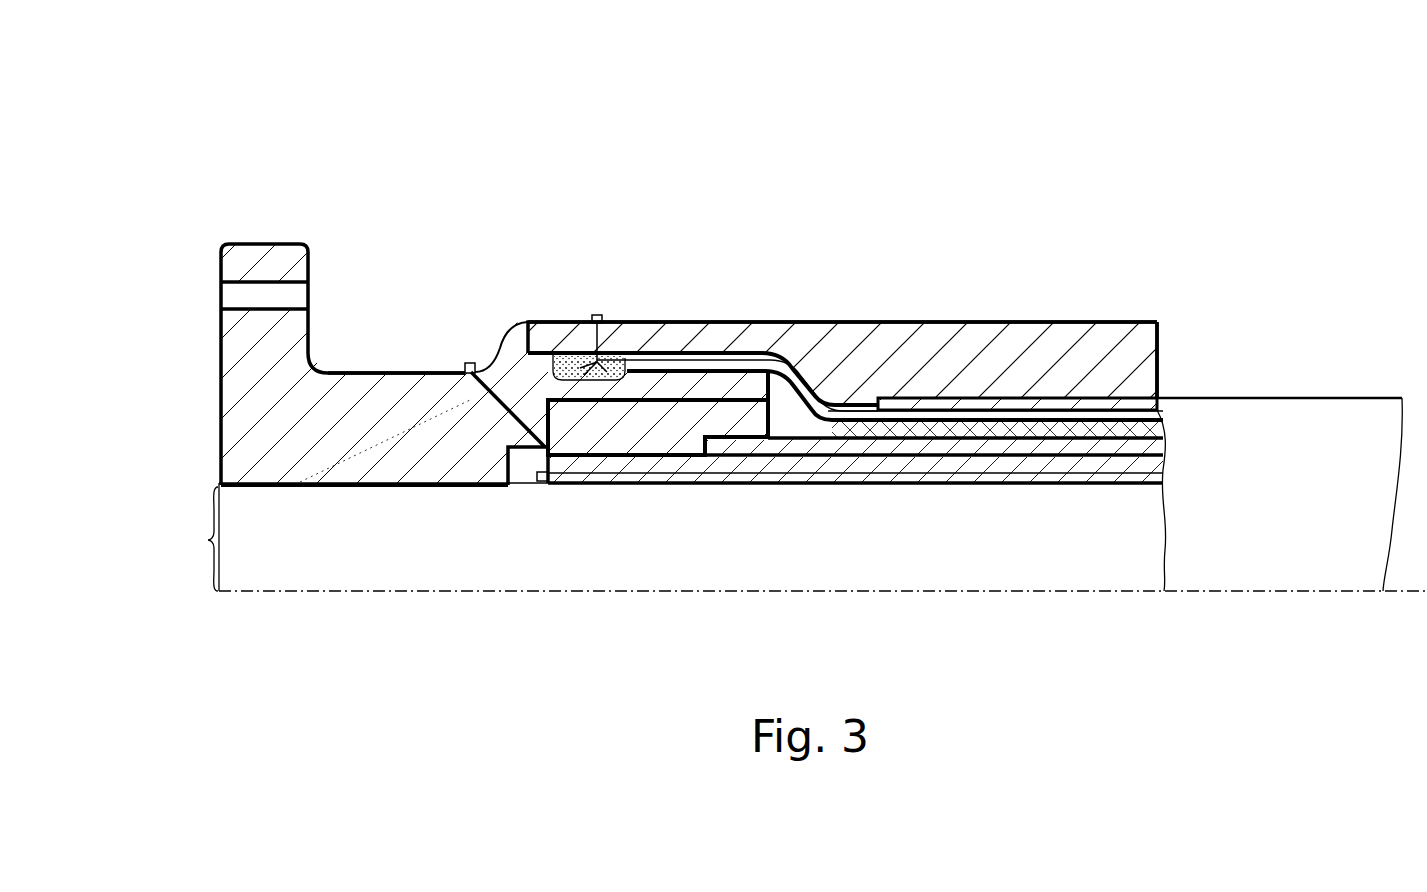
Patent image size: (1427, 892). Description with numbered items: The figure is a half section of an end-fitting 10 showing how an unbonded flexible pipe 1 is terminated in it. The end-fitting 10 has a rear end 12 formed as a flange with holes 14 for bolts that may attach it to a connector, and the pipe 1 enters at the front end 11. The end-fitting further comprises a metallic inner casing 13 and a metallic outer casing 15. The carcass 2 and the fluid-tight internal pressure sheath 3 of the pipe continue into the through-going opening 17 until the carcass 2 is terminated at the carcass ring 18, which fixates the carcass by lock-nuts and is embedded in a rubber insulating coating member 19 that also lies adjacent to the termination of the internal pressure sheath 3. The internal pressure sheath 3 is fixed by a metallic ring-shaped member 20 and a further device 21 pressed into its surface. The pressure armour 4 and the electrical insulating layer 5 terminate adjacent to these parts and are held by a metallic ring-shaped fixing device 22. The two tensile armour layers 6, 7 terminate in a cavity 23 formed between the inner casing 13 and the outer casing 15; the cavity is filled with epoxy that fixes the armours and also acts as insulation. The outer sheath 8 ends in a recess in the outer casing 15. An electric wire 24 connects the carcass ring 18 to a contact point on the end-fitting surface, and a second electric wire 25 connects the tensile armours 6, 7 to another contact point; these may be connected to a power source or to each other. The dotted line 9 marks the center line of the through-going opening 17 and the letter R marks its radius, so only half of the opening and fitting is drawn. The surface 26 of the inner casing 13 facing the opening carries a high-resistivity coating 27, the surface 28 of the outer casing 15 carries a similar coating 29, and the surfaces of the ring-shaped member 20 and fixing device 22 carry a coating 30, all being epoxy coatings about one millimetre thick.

The unbonded flexible pipe 1 is at (1313, 372).
The carcass 2 is at (757, 480).
The internal pressure sheath 3 is at (945, 462).
The pressure armour 4 is at (1017, 450).
The electrical insulating layer 5 is at (1082, 425).
The tensile armour layer 6 is at (653, 351).
The tensile armour layer 7 is at (704, 365).
The outer sheath 8 is at (1147, 403).
The dotted line 9 is at (325, 592).
The end-fitting 10 is at (760, 285).
The front end 11 is at (1157, 338).
The rear end 12 is at (220, 345).
The inner casing 13 is at (363, 378).
The holes 14 is at (307, 295).
The outer casing 15 is at (898, 322).
The through-going opening 17 is at (255, 577).
The carcass ring 18 is at (541, 482).
The insulating coating member 19 is at (513, 484).
The ring-shaped member 20 is at (635, 440).
The further device 21 is at (722, 450).
The ring-shaped fixing device 22 is at (787, 362).
The cavity 23 is at (566, 357).
The electric wire 24 is at (470, 362).
The second electric wire 25 is at (597, 314).
The surface of the inner casing 26 is at (332, 486).
The coating 27 is at (390, 486).
The surface of the outer casing 28 is at (955, 397).
The coating 29 is at (1013, 397).
The coating 30 is at (672, 470).
The radius R is at (201, 539).